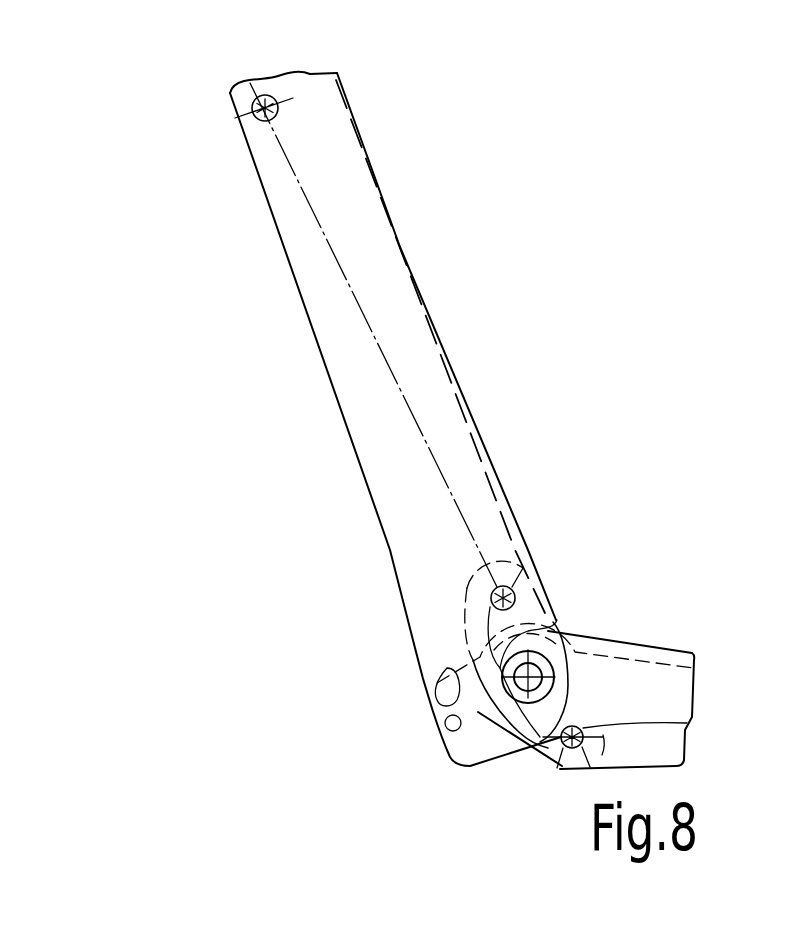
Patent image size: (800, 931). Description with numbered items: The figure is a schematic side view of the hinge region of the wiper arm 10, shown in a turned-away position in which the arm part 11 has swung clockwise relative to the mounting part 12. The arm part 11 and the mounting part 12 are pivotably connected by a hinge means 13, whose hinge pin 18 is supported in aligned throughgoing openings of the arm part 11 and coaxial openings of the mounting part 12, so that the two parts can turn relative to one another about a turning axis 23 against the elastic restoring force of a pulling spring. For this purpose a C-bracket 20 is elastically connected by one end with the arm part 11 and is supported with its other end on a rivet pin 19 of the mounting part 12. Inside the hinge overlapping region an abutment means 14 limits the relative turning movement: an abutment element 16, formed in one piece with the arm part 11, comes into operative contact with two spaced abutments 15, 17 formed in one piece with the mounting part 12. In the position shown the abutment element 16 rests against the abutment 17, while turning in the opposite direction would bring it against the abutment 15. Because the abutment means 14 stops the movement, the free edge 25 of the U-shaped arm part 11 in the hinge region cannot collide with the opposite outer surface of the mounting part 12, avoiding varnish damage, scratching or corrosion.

The wiper arm 10 is at (248, 297).
The arm part 11 is at (382, 283).
The mounting part 12 is at (637, 692).
The hinge means 13 is at (511, 757).
The abutment means 14 is at (490, 722).
The abutment 15 is at (555, 768).
The abutment element 16 is at (440, 720).
The abutment 17 is at (447, 670).
The hinge pin 18 is at (558, 652).
The rivet pin 19 is at (592, 735).
The C-bracket 20 is at (480, 605).
The turning axis 23 is at (587, 683).
The free edge 25 is at (550, 636).